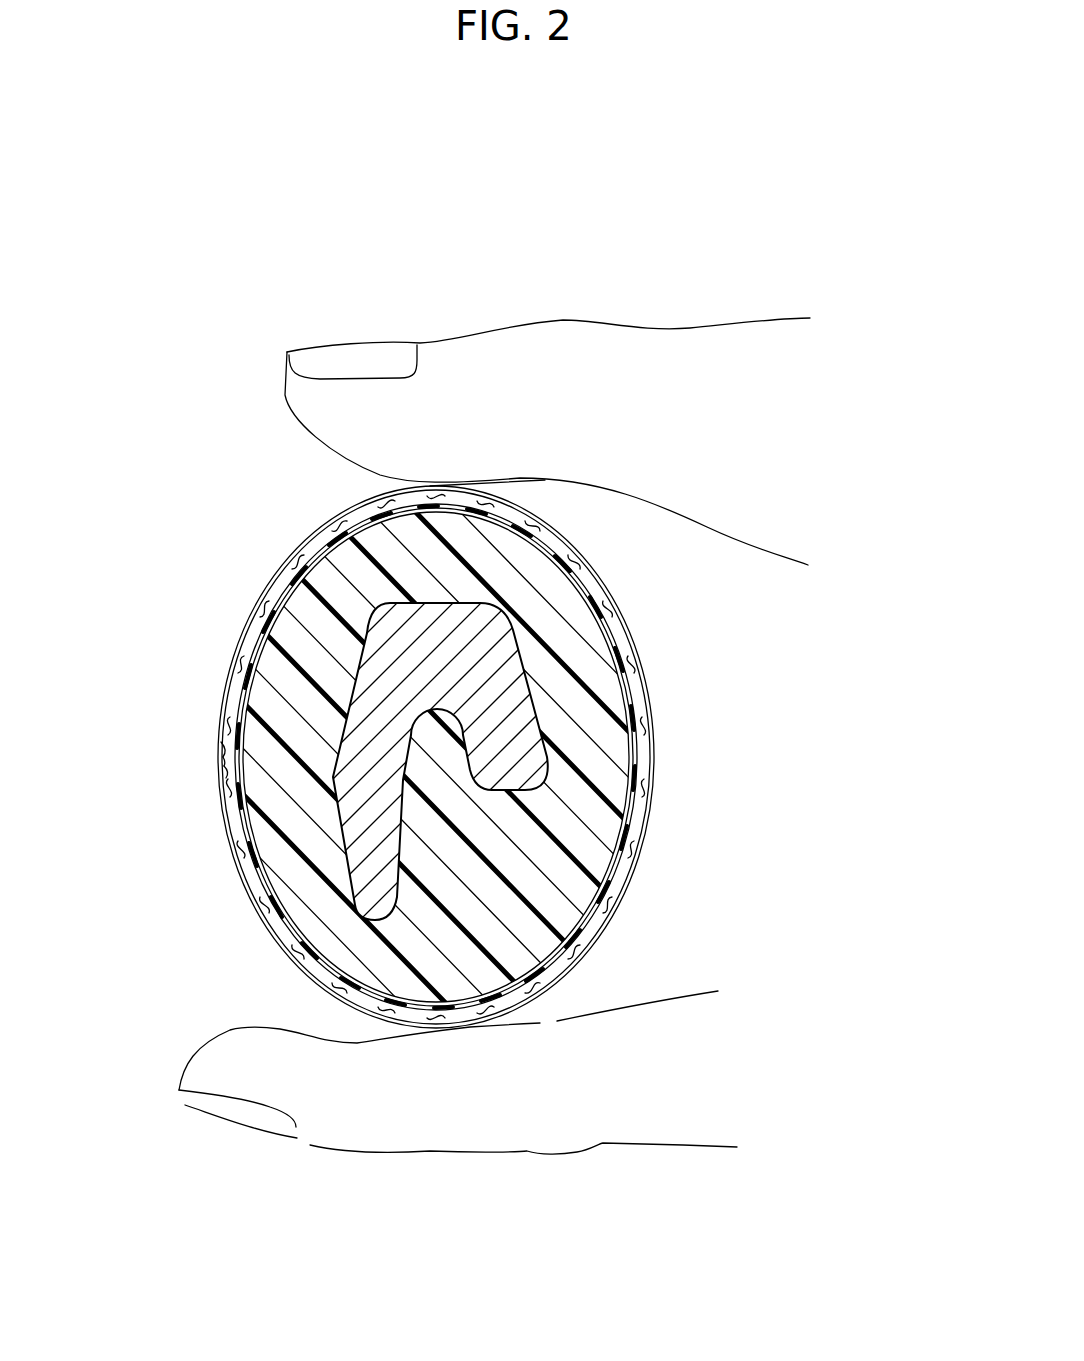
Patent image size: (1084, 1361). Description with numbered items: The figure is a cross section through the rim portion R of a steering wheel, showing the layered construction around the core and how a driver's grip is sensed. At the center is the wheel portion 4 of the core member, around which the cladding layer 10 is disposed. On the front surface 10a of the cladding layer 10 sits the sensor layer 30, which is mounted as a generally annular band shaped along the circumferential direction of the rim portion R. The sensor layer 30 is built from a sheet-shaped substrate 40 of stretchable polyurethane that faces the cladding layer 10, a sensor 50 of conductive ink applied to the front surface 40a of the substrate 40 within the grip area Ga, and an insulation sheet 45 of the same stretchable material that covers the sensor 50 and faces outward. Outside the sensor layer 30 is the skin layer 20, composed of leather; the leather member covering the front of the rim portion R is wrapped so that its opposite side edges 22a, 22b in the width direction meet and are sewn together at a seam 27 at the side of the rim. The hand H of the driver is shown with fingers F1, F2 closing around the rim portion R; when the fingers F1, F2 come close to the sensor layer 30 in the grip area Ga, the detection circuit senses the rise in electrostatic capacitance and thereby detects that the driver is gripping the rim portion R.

The hand H is at (607, 290).
The finger F1 is at (726, 312).
The finger F2 is at (690, 1150).
The rim portion R is at (230, 470).
The grip area Ga is at (515, 495).
The front surface of the substrate 40a is at (613, 598).
The cladding layer 10 is at (288, 683).
The front surface of the cladding layer 10a is at (603, 667).
The skin layer 20 is at (648, 702).
The side edge 22a is at (223, 773).
The side edge 22b is at (220, 748).
The overlap portion 27 is at (210, 757).
The sensor layer 30 is at (828, 738).
The substrate 40 is at (616, 862).
The insulation sheet 45 is at (633, 798).
The sensor 50 is at (628, 772).
The wheel portion 4 is at (353, 860).